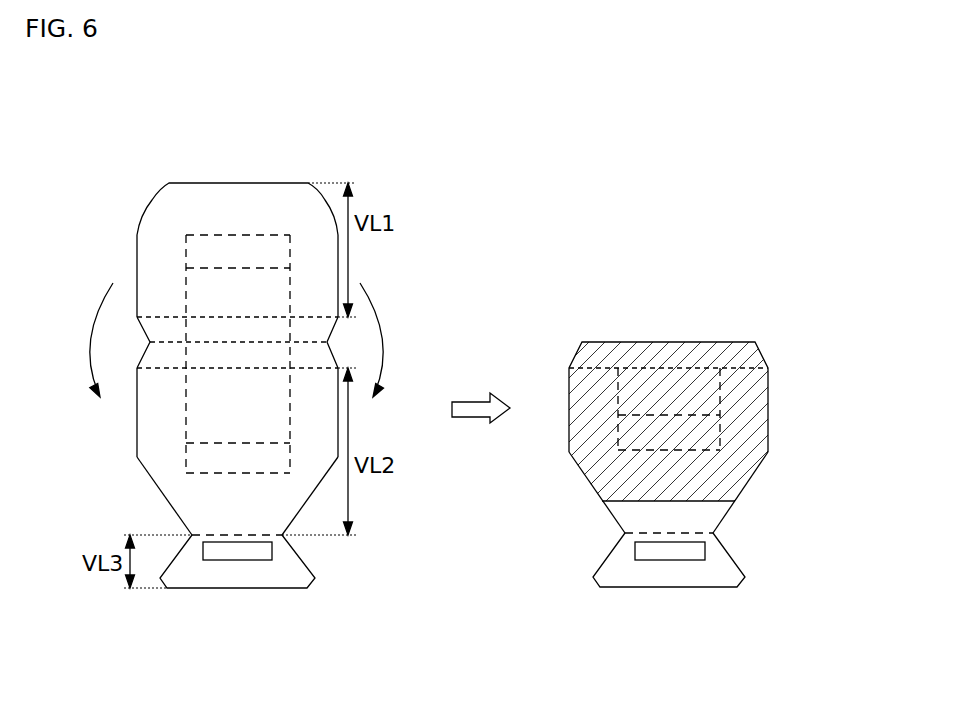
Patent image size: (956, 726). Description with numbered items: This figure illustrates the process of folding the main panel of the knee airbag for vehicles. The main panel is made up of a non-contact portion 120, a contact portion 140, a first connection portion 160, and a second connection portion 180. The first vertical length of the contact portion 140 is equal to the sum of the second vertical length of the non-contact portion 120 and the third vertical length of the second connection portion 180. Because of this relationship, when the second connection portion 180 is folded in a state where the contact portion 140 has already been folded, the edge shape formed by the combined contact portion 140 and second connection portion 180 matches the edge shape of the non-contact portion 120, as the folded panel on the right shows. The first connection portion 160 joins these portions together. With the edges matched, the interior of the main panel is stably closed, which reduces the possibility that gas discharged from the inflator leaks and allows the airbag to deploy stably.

The non-contact portion 120 is at (251, 165).
The contact portion 140 is at (124, 459).
The first connection portion 160 is at (172, 364).
The second connection portion 180 is at (250, 606).